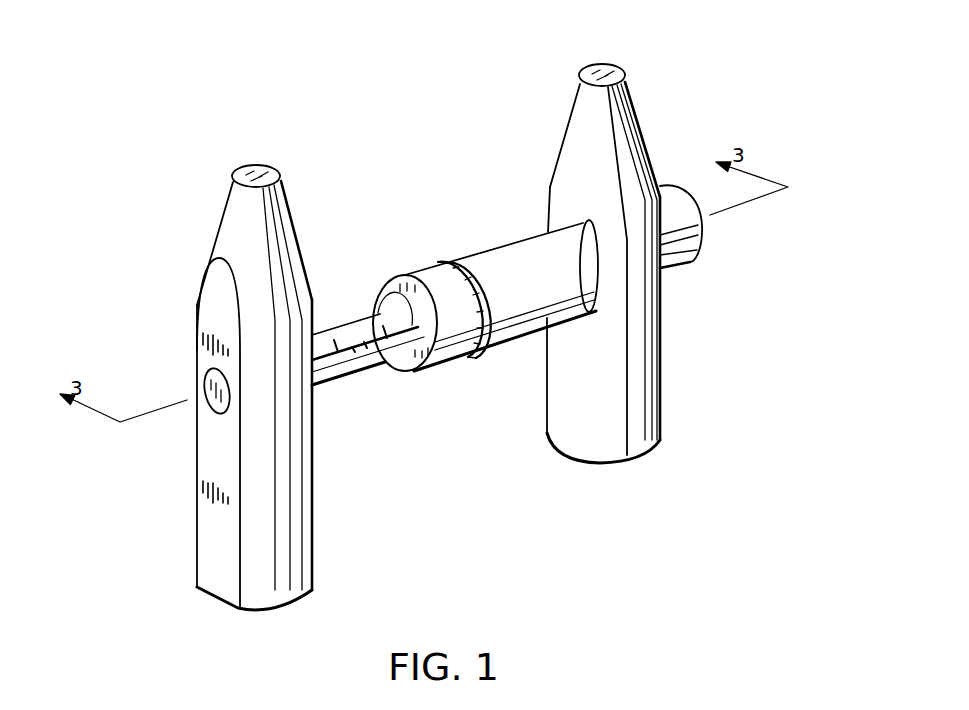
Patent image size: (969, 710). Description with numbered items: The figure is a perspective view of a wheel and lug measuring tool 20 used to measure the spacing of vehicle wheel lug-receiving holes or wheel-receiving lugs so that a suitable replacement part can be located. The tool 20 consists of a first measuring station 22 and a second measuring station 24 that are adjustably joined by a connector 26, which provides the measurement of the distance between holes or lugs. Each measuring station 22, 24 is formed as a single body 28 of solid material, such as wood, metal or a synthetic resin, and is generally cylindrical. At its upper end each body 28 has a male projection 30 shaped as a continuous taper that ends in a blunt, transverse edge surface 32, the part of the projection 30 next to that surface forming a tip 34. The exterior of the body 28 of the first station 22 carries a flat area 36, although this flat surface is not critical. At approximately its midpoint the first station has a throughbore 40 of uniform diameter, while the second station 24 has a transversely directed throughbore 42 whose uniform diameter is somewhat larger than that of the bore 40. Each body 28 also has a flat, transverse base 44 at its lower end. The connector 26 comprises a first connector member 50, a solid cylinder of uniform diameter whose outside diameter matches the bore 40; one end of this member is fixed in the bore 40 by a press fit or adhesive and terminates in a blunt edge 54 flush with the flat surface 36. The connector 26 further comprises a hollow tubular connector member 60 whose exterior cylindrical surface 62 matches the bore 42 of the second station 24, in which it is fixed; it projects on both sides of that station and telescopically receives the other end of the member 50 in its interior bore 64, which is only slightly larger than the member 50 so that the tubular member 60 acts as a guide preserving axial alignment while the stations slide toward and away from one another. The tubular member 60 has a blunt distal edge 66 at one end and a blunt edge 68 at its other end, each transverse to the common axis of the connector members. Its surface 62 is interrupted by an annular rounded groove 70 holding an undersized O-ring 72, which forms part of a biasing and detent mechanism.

The tool 20 is at (458, 165).
The first measuring station 22 is at (226, 160).
The second measuring station 24 is at (665, 102).
The connector 26 is at (485, 352).
The body 28 is at (250, 536).
The male portion or projection 30 is at (207, 243).
The blunt transverse edge surface 32 is at (257, 167).
The tip 34 is at (232, 190).
The flat area or surface 36 is at (212, 462).
The throughbore 40 is at (220, 413).
The transversely directed throughbore 42 is at (598, 278).
The flat transverse base 44 is at (252, 606).
The first connector member 50 is at (319, 383).
The blunt edge 54 is at (205, 374).
The hollow tubular connector member 60 is at (568, 306).
The exterior cylindrical surface 62 is at (493, 352).
The interior longitudinally-directed bore 64 is at (384, 310).
The blunt distal edge 66 is at (704, 236).
The blunt edge 68 is at (377, 360).
The annular rounded groove 70 is at (463, 284).
The O-ring 72 is at (441, 261).